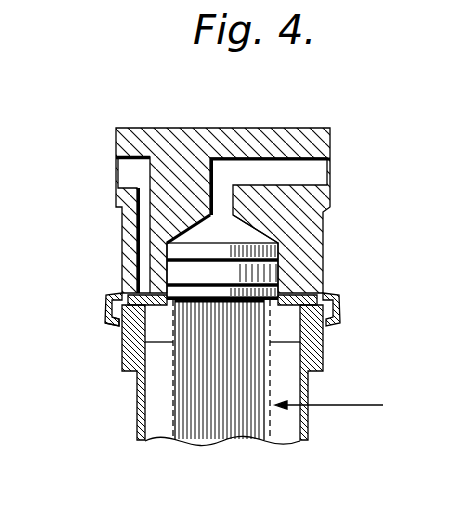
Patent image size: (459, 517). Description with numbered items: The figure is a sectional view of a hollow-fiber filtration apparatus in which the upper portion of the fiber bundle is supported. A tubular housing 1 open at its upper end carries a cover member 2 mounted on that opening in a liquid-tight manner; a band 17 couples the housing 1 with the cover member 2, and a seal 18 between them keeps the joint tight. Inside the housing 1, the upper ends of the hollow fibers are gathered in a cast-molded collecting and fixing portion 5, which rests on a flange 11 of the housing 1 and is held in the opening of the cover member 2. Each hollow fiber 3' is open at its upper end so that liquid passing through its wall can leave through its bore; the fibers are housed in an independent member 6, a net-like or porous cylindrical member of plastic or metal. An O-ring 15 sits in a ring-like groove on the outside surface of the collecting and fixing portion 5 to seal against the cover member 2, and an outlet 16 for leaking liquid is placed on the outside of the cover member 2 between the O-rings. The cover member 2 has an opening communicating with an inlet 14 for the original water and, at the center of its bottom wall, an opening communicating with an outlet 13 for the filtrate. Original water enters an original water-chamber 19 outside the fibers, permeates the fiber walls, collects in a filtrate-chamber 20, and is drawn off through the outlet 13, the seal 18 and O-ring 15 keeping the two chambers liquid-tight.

The tubular housing 1 is at (310, 428).
The cover member 2 is at (292, 128).
The hollow fiber 3' is at (286, 370).
The collecting and fixing portion 5 is at (280, 250).
The independent member 6 is at (177, 415).
The flange 11 is at (292, 308).
The outlet for the filtrate 13 is at (315, 168).
The inlet for the original water 14 is at (117, 168).
The O-ring 15 is at (167, 256).
The outlet for leaking liquid 16 is at (280, 270).
The band 17 is at (103, 297).
The seal 18 is at (110, 315).
The original water-chamber 19 is at (158, 393).
The filtrate-chamber 20 is at (247, 236).